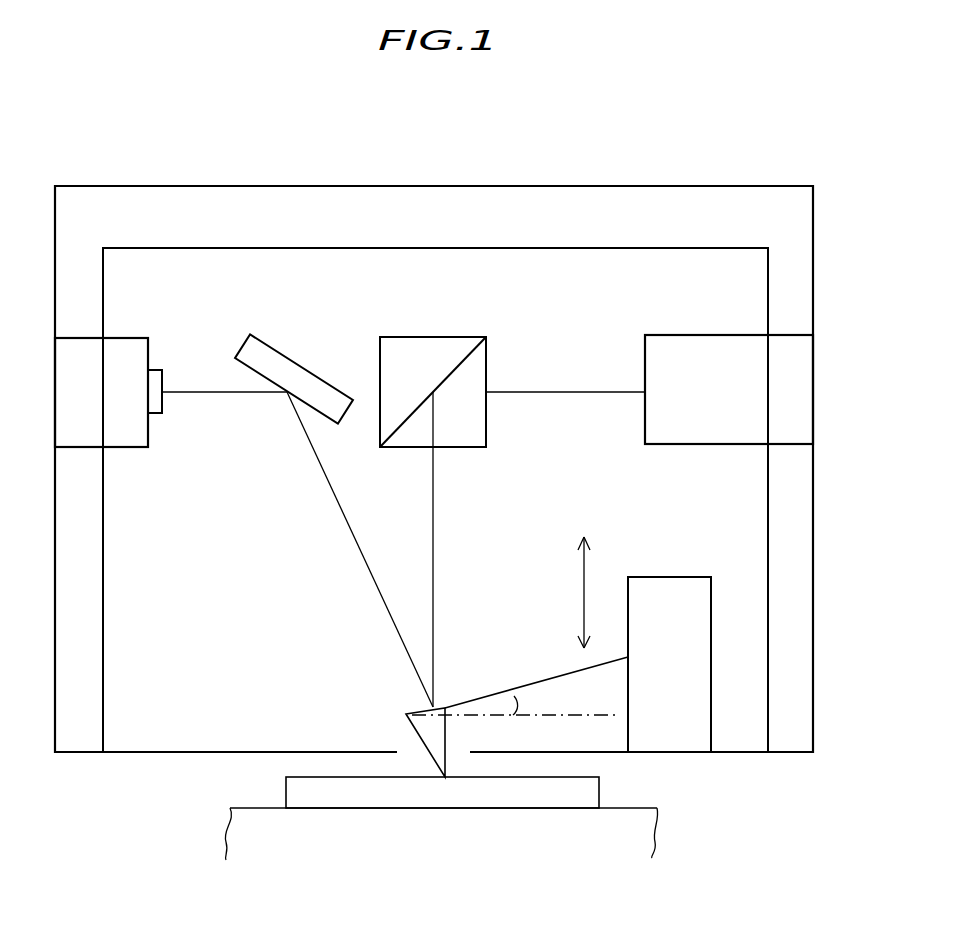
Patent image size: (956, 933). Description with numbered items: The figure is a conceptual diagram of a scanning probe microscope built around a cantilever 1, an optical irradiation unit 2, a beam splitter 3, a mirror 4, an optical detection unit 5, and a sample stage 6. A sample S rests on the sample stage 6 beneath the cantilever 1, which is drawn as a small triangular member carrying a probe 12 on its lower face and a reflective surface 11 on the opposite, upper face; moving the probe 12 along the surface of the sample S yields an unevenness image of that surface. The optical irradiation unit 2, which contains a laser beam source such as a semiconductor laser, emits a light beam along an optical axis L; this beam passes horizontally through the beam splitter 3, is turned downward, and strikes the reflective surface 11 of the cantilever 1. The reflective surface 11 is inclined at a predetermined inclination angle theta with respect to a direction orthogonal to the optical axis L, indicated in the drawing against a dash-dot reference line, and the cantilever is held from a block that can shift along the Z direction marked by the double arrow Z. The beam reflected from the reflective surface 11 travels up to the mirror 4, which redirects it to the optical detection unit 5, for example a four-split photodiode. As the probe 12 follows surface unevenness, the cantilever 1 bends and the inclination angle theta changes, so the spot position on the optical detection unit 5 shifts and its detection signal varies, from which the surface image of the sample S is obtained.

The cantilever 1 is at (479, 679).
The optical irradiation unit 2 is at (697, 335).
The beam splitter 3 is at (433, 337).
The mirror 4 is at (287, 353).
The optical detection unit 5 is at (162, 375).
The sample stage 6 is at (248, 806).
The reflective surface 11 is at (420, 708).
The probe 12 is at (415, 735).
The optical axis L is at (546, 392).
The Z direction Z is at (584, 572).
The sample S is at (380, 808).
The inclination angle theta is at (525, 701).